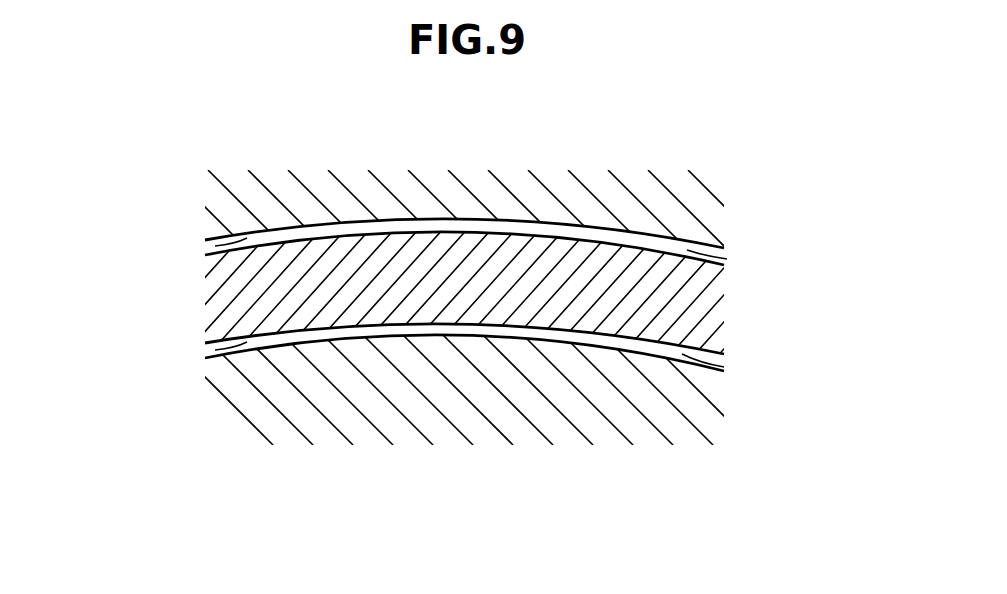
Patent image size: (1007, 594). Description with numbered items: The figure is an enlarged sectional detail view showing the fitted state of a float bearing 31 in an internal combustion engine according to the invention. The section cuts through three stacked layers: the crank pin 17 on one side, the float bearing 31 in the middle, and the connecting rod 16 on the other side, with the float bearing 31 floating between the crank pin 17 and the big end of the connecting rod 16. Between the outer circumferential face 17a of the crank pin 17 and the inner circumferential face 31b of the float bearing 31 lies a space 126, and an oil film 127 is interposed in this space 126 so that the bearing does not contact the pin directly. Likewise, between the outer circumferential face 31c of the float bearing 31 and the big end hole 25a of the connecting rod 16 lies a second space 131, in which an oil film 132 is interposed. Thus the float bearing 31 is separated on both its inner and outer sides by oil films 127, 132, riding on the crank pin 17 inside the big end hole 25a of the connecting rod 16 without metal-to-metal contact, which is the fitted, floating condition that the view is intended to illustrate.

The connecting rod 16 is at (196, 195).
The crank pin 17 is at (200, 412).
The float bearing 31 is at (739, 317).
The space 131 is at (389, 201).
The oil film 132 is at (512, 227).
The space 126 is at (398, 349).
The oil film 127 is at (513, 338).
The big end hole 25a is at (215, 246).
The outer circumferential face 17a is at (215, 350).
The outer circumferential face 31c is at (727, 259).
The inner circumferential face 31b is at (724, 367).